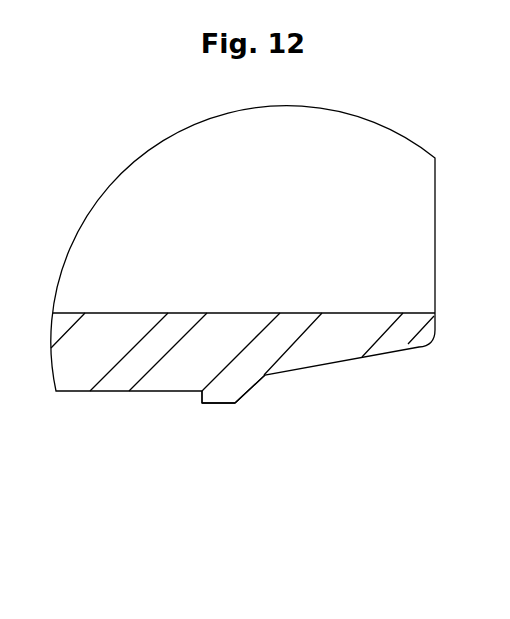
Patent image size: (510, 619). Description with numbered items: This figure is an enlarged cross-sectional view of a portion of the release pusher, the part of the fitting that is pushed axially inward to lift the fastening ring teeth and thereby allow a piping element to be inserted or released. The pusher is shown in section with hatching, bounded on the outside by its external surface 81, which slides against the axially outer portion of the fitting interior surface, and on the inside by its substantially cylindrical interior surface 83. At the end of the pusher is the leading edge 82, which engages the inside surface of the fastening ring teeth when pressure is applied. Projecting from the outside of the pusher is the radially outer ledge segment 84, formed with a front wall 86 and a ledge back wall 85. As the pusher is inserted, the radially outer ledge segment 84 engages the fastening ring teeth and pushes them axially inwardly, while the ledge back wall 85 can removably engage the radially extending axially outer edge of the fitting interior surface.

The external surface 81 is at (128, 391).
The leading edge 82 is at (436, 324).
The substantially cylindrical interior surface 83 is at (168, 313).
The radially outer ledge segment 84 is at (215, 403).
The ledge back wall 85 is at (203, 401).
The front wall 86 is at (250, 390).